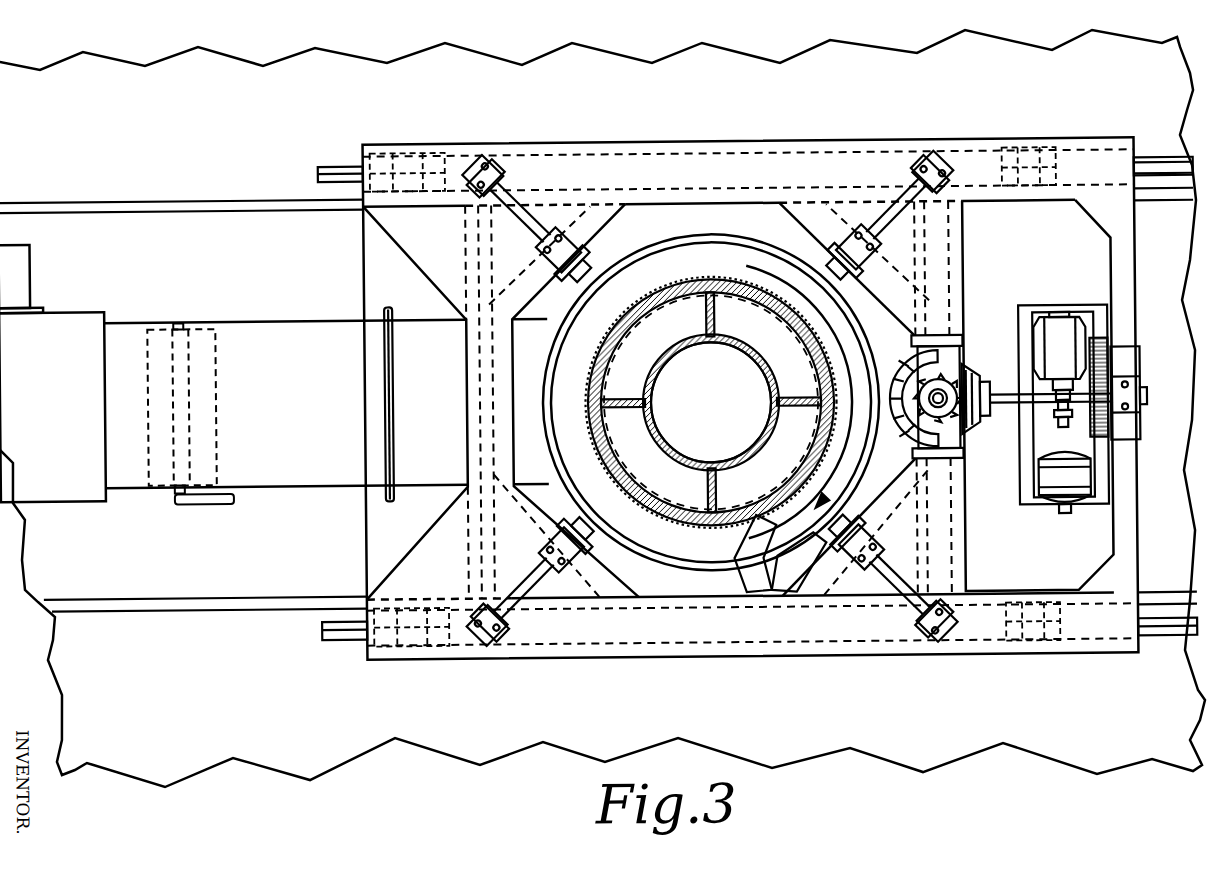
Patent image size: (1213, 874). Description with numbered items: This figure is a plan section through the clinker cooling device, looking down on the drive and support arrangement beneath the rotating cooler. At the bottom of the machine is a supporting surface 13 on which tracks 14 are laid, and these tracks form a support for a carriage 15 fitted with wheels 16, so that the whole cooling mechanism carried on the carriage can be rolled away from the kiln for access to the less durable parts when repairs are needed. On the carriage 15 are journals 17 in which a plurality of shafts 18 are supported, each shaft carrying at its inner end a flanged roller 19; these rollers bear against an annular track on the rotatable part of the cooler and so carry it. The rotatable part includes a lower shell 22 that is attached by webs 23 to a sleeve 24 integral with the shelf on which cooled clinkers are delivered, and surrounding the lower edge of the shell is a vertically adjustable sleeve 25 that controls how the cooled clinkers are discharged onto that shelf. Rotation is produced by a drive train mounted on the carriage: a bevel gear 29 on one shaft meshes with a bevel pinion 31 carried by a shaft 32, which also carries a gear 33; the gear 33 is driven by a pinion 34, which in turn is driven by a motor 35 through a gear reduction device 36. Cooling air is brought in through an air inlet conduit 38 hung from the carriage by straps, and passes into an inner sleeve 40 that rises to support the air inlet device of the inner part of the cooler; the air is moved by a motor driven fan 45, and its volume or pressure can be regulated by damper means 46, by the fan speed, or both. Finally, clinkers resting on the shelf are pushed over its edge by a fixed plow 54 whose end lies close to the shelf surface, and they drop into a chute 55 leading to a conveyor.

The supporting surface 13 is at (612, 68).
The tracks 14 is at (342, 165).
The carriage 15 is at (976, 140).
The wheels 16 is at (446, 156).
The journals 17 is at (490, 182).
The shafts 18 is at (530, 222).
The flanged roller 19 is at (600, 258).
The lower shell 22 is at (602, 357).
The webs 23 is at (714, 318).
The sleeve 24 is at (658, 448).
The vertically adjustable sleeve 25 is at (655, 286).
The bevel gear 29 is at (912, 430).
The bevel pinion 31 is at (986, 424).
The shaft 32 is at (1005, 393).
The gear 33 is at (1104, 426).
The pinion 34 is at (1104, 342).
The motor 35 is at (1065, 482).
The gear reduction device 36 is at (1063, 405).
The air inlet conduit 38 is at (413, 404).
The inner sleeve 40 is at (662, 380).
The motor driven fan 45 is at (68, 332).
The damper means 46 is at (214, 414).
The fixed plow 54 is at (742, 553).
The chute 55 is at (773, 572).